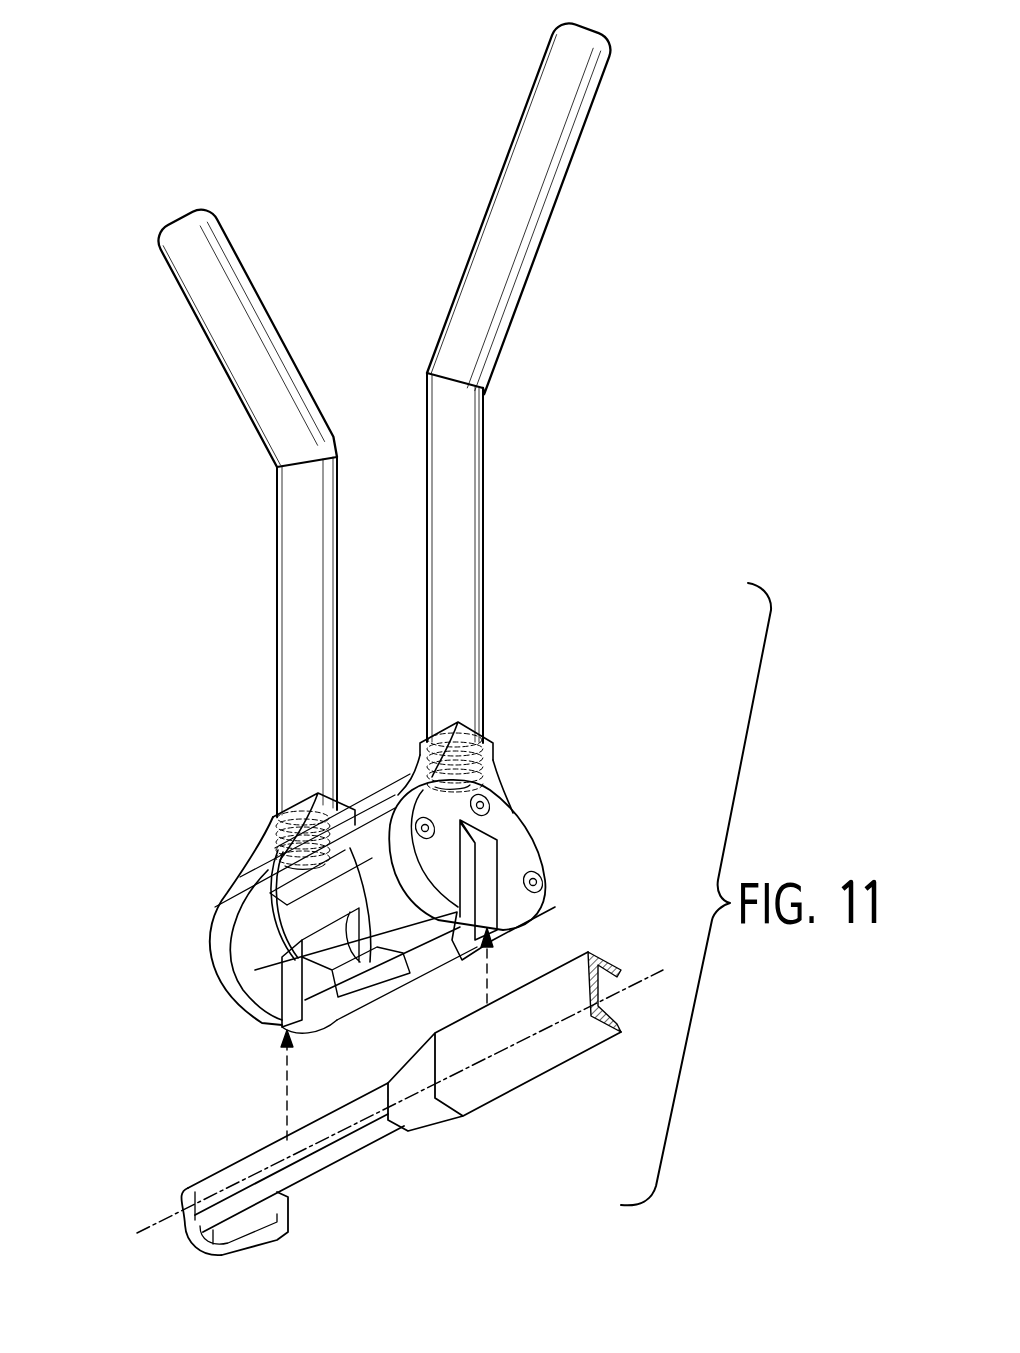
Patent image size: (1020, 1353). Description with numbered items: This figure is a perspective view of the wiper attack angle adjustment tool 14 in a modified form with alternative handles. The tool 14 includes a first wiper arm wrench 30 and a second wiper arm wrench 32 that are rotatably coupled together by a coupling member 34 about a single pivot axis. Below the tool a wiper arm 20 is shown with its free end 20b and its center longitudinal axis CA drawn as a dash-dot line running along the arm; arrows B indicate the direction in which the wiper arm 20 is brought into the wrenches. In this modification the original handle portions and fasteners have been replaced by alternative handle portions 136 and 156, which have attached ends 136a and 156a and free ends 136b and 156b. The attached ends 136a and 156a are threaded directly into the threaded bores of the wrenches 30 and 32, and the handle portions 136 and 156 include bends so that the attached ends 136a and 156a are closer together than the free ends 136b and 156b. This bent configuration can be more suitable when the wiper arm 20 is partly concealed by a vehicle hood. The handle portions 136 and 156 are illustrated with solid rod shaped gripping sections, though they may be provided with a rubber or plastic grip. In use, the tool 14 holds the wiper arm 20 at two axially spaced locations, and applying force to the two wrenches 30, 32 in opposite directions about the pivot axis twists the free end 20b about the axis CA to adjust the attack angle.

The wiper attack angle adjustment tool 14 is at (160, 870).
The wiper arm 20 is at (490, 1087).
The free end 20b is at (313, 1170).
The first wiper arm wrench 30 is at (560, 840).
The second wiper arm wrench 32 is at (195, 984).
The coupling member 34 is at (370, 798).
The handle portion 136 is at (487, 640).
The attached end 136a is at (470, 790).
The free end 136b is at (597, 93).
The handle portion 156 is at (277, 650).
The attached end 156a is at (262, 840).
The free end 156b is at (183, 285).
The direction arrow B is at (285, 1090).
The center longitudinal axis CA is at (232, 1183).